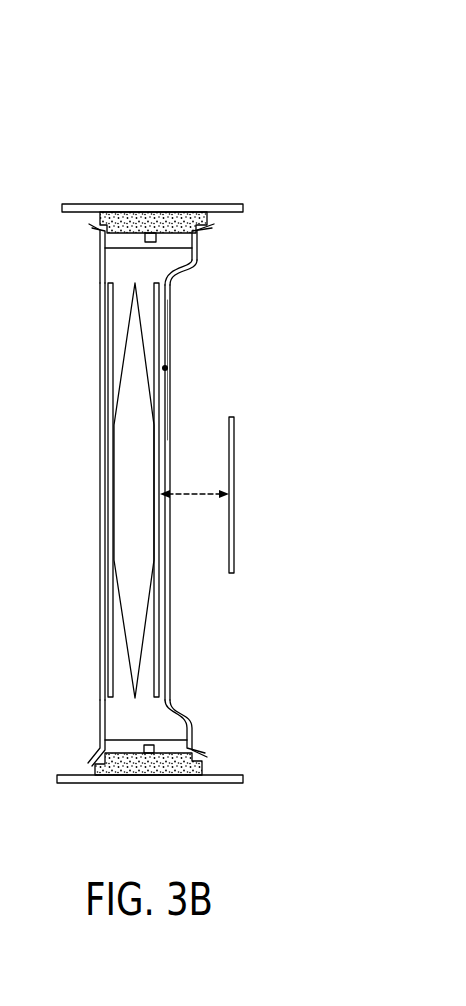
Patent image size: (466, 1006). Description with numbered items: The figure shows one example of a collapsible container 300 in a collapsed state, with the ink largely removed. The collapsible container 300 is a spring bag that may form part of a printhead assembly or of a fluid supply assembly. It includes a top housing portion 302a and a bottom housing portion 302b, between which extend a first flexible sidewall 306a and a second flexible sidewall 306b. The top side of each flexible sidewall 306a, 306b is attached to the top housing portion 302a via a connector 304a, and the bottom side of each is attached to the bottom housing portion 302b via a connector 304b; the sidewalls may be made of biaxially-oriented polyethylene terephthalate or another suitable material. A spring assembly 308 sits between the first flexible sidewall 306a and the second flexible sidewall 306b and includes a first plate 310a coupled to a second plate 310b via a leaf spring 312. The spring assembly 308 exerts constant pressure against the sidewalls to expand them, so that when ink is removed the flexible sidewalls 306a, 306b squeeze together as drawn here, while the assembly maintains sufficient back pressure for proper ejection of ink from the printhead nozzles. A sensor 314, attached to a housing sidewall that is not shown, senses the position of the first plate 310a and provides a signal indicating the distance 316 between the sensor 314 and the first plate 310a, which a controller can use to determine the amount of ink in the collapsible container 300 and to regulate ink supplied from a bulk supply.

The collapsible container 300 is at (140, 91).
The top housing portion 302a is at (217, 204).
The bottom housing portion 302b is at (213, 783).
The connector 304a is at (183, 239).
The connector 304b is at (184, 746).
The first flexible sidewall 306a is at (169, 328).
The second flexible sidewall 306b is at (100, 340).
The spring assembly 308 is at (167, 369).
The first plate 310a is at (158, 630).
The second plate 310b is at (110, 630).
The leaf spring 312 is at (141, 665).
The sensor 314 is at (234, 470).
The distance 316 is at (191, 488).